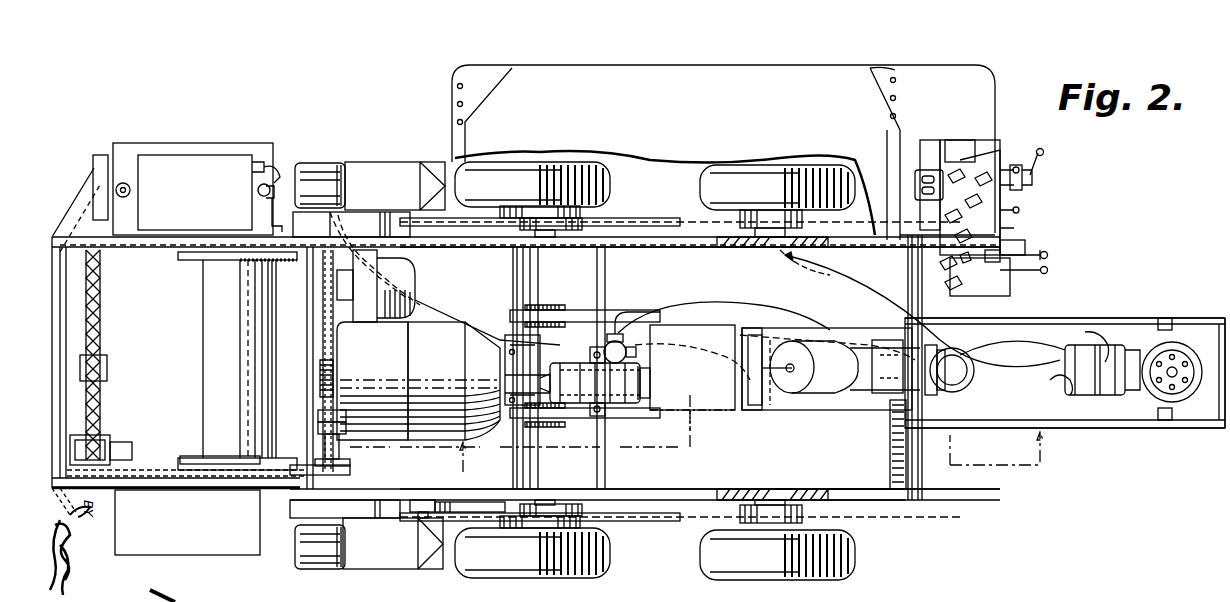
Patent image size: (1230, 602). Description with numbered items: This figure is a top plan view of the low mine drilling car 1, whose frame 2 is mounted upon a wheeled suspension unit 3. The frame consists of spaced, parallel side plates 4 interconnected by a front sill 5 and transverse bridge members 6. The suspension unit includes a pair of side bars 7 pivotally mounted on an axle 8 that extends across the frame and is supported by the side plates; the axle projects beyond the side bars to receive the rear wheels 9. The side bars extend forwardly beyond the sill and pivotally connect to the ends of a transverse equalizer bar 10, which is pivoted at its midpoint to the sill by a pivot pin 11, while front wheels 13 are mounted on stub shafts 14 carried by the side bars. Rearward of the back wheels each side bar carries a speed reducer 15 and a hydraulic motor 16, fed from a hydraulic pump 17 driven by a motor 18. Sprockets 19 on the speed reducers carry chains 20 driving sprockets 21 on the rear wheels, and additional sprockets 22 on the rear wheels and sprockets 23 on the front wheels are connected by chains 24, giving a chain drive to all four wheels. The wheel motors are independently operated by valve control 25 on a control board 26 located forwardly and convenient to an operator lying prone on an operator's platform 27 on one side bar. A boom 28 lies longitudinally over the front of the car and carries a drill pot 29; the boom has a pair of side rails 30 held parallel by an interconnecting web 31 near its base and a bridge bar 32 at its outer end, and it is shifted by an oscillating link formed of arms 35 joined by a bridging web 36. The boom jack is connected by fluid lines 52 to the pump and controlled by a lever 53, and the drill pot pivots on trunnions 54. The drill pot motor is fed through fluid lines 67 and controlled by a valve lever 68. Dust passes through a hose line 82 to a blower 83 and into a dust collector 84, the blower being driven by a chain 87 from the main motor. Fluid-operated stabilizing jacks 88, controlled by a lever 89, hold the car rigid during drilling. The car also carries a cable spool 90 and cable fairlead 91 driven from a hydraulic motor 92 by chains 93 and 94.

The car 1 is at (685, 505).
The frame 2 is at (830, 492).
The wheeled suspension unit 3 is at (866, 492).
The side plates 4 is at (696, 433).
The front sill 5 is at (876, 452).
The transverse bridge members 6 is at (513, 289).
The side bars 7 is at (652, 247).
The axle 8 is at (540, 430).
The rear wheels 9 is at (553, 185).
The transverse equalizer bar 10 is at (922, 446).
The pivot pin 11 is at (893, 380).
The front wheels 13 is at (810, 560).
The stub shafts 14 is at (775, 247).
The speed reducer 15 is at (388, 172).
The hydraulic motor 16 is at (318, 168).
The hydraulic pump 17 is at (625, 410).
The motor 18 is at (450, 388).
The sprockets 19 is at (420, 500).
The chains 20 is at (465, 502).
The sprockets 21 is at (582, 224).
The sprockets 22 is at (500, 206).
The sprockets 23 is at (802, 220).
The chains 24 is at (658, 222).
The valve control 25 is at (1000, 168).
The control board 26 is at (962, 160).
The operator's platform 27 is at (803, 123).
The boom 28 is at (1085, 440).
The drill pot 29 is at (1180, 340).
The side rails 30 is at (1136, 318).
The interconnecting web 31 is at (695, 325).
The bridge bar 32 is at (1218, 412).
The arms 35 is at (565, 310).
The bridging web 36 is at (604, 348).
The fluid lines 52 is at (730, 305).
The lever 53 is at (1040, 258).
The trunnions 54 is at (1165, 318).
The fluid lines 67 is at (1085, 342).
The valve lever 68 is at (995, 292).
The hose line 82 is at (845, 288).
The blower 83 is at (415, 290).
The dust collector 84 is at (190, 165).
The chain 87 is at (323, 332).
The stabilizing jacks 88 is at (960, 370).
The lever 89 is at (1050, 270).
The cable spool 90 is at (215, 408).
The cable fairlead 91 is at (107, 367).
The hydraulic motor 92 is at (345, 408).
The chain 93 is at (282, 464).
The chain 94 is at (150, 468).